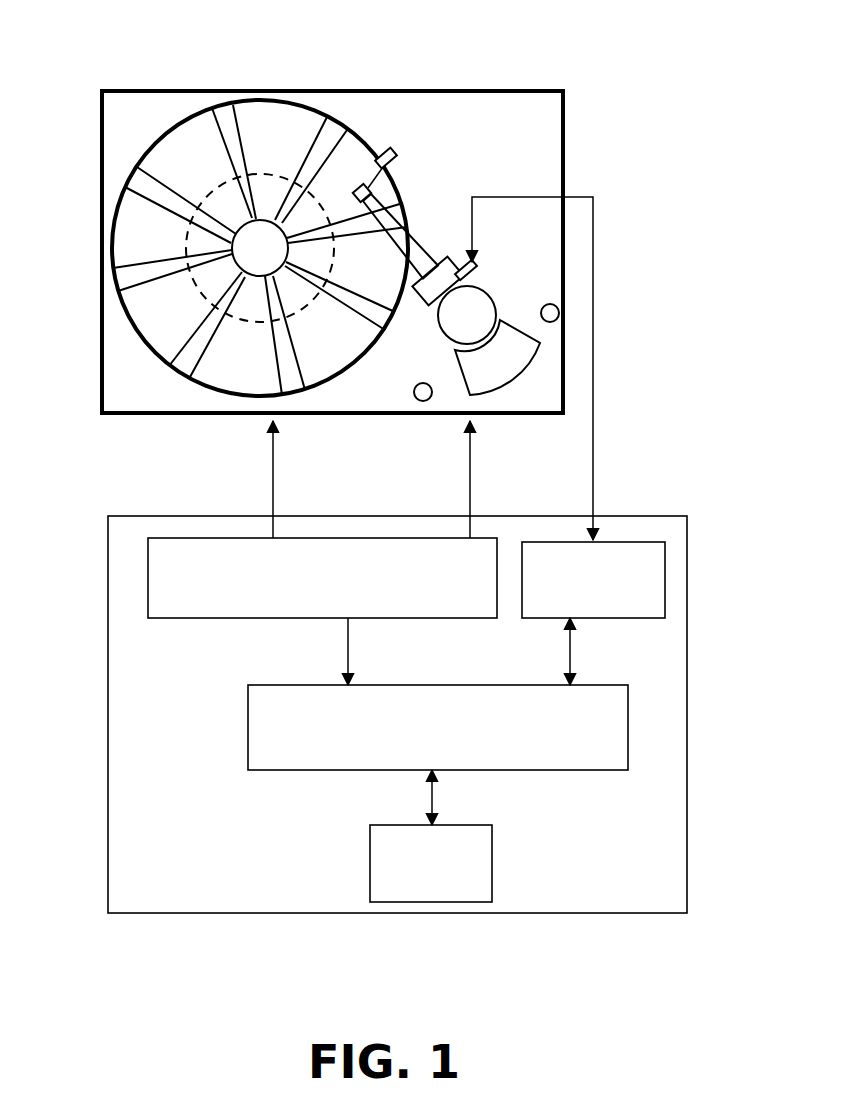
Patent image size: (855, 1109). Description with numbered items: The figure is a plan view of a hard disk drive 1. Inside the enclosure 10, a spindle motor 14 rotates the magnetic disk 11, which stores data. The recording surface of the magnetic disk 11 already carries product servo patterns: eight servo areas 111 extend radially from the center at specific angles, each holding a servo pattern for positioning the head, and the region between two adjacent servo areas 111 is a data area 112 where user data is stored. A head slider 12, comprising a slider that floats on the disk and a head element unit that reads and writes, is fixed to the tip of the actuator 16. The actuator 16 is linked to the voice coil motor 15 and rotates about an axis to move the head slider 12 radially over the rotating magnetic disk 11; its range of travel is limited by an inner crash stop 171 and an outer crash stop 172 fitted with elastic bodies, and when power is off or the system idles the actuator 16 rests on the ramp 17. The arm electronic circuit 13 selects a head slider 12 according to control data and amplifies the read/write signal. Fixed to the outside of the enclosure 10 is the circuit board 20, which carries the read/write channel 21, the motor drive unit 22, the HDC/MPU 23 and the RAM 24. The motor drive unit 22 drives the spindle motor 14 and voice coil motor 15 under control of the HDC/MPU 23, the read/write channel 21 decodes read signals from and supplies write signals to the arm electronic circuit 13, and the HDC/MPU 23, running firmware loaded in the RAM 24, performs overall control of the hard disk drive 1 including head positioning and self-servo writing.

The hard disk drive 1 is at (484, 36).
The enclosure 10 is at (102, 257).
The magnetic disk 11 is at (305, 106).
The servo area 111 is at (150, 187).
The data area 112 is at (222, 383).
The head slider 12 is at (372, 186).
The arm electronic circuit 13 is at (476, 274).
The spindle motor 14 is at (225, 183).
The voice coil motor 15 is at (521, 329).
The actuator 16 is at (407, 330).
The ramp 17 is at (392, 152).
The inner crash stop 171 is at (550, 324).
The outer crash stop 172 is at (419, 401).
The circuit board 20 is at (153, 514).
The read/write channel 21 is at (584, 607).
The motor drive unit 22 is at (303, 611).
The HDC/MPU 23 is at (514, 742).
The RAM 24 is at (421, 891).